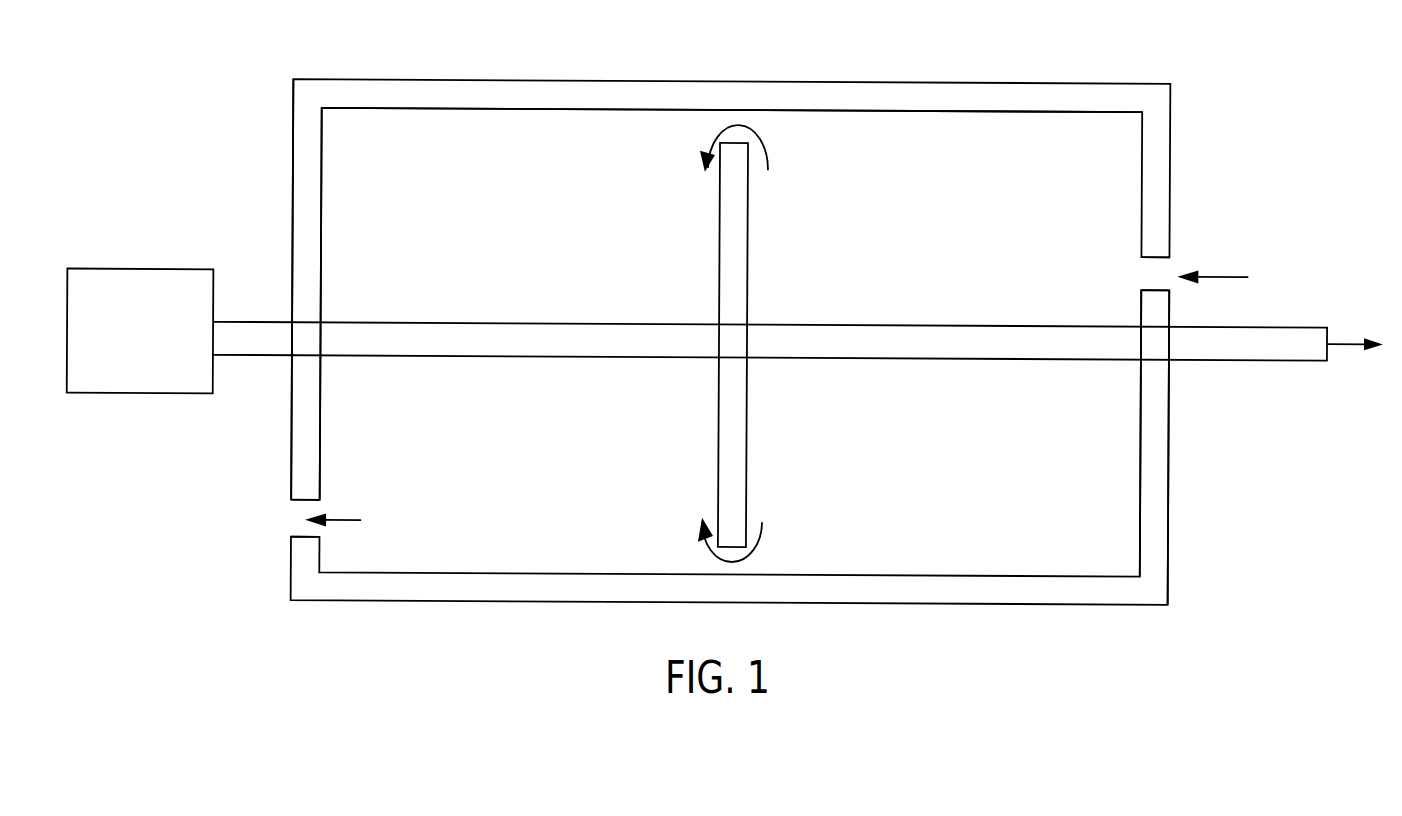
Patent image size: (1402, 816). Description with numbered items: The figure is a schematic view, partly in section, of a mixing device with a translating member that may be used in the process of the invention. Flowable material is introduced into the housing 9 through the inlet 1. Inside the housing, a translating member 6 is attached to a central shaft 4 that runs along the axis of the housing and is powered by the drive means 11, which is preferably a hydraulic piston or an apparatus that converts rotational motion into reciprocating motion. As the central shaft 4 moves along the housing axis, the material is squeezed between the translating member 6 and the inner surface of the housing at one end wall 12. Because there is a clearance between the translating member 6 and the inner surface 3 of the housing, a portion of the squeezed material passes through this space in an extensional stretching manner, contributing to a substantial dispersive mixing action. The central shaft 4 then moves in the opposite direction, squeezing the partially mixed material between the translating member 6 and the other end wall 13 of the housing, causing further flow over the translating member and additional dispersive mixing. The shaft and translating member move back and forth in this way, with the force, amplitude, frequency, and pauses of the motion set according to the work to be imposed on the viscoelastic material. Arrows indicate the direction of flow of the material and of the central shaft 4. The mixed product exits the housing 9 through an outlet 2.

The inlet 1 is at (1154, 268).
The outlet 2 is at (290, 524).
The inner surface of the housing 3 is at (920, 110).
The central shaft 4 is at (1202, 359).
The translating member 6 is at (747, 455).
The housing 9 is at (860, 81).
The drive means 11 is at (136, 272).
The end wall 12 is at (1139, 487).
The other end wall 13 is at (320, 433).